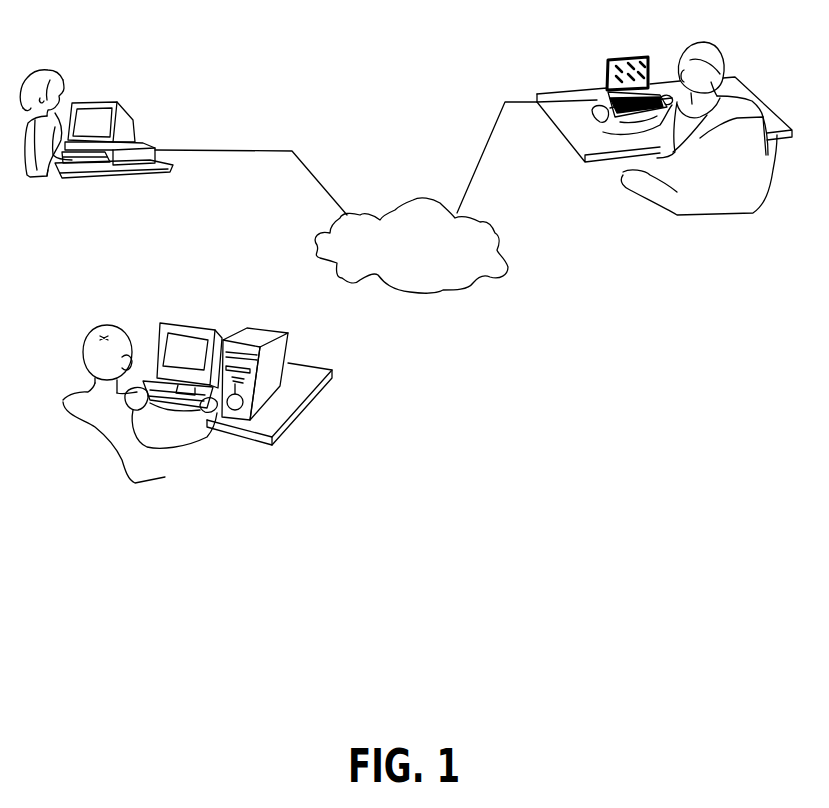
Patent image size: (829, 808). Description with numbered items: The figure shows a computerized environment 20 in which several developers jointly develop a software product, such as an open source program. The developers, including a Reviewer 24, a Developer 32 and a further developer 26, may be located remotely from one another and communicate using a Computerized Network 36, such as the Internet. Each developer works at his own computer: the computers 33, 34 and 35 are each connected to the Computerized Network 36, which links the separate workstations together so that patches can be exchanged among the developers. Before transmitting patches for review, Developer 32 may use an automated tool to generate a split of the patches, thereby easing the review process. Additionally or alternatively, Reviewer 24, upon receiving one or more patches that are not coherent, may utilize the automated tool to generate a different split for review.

The computerized environment 20 is at (178, 50).
The user 26 is at (58, 74).
The developer's computer 34 is at (144, 144).
The computerized network 36 is at (403, 200).
The reviewer 24 is at (757, 99).
The developer's computer 33 is at (607, 95).
The developer 32 is at (122, 328).
The developer's computer 35 is at (247, 342).